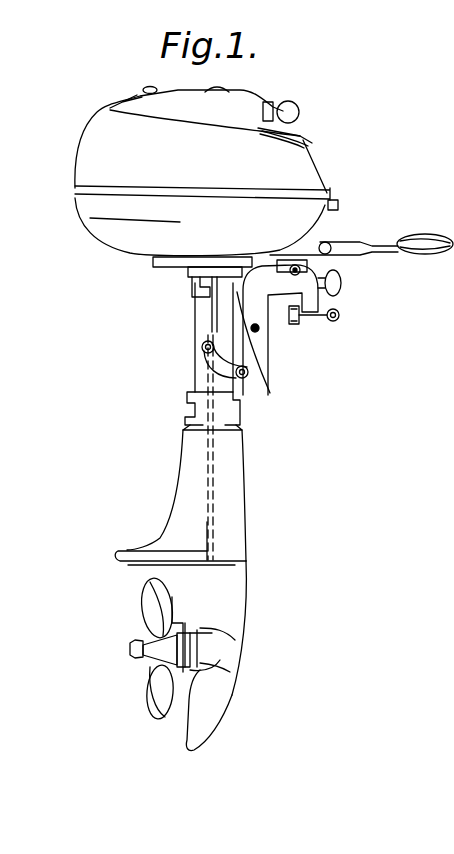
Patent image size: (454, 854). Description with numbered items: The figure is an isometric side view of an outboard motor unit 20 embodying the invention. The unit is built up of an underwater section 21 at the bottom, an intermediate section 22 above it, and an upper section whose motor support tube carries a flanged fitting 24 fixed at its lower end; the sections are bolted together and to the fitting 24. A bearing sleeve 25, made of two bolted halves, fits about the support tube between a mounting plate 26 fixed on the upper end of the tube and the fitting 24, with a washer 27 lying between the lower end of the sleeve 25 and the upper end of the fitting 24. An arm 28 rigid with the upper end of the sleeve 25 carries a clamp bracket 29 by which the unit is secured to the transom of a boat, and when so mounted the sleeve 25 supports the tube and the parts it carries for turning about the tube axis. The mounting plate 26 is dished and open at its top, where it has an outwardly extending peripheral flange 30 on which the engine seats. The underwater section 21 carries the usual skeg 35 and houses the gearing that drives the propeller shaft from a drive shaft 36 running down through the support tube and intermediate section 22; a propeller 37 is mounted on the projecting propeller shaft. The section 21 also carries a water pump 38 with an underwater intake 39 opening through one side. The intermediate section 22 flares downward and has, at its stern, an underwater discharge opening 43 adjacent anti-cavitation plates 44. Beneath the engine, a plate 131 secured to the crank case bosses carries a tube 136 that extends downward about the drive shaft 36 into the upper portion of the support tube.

The outboard motor unit 20 is at (128, 350).
The underwater section 21 is at (233, 598).
The intermediate section 22 is at (238, 500).
The flanged fitting 24 is at (312, 432).
The bearing sleeve 25 is at (197, 376).
The mounting plate 26 is at (190, 266).
The washer 27 is at (228, 393).
The arm 28 is at (237, 292).
The clamp bracket 29 is at (272, 346).
The peripheral flange 30 is at (152, 265).
The skeg 35 is at (200, 713).
The drive shaft 36 is at (215, 458).
The propeller 37 is at (162, 689).
The water pump 38 is at (200, 645).
The underwater intake 39 is at (190, 633).
The underwater discharge opening 43 is at (125, 550).
The anti-cavitation plates 44 is at (122, 565).
The plate 131 is at (204, 259).
The tube 136 is at (208, 323).